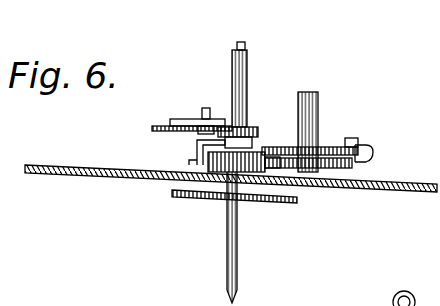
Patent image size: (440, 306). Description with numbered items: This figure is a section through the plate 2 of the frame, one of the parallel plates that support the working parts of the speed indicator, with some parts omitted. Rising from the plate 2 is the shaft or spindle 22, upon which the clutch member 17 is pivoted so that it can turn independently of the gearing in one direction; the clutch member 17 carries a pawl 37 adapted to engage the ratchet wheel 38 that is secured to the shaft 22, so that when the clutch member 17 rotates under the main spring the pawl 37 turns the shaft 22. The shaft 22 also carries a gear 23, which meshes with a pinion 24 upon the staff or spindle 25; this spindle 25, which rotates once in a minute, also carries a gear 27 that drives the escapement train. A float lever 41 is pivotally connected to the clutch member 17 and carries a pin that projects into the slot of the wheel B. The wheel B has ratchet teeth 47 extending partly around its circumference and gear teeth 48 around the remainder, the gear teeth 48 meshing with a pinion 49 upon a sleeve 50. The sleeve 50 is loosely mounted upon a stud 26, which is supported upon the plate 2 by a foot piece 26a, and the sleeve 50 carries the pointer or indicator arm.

The plate 2 is at (55, 166).
The ratchet teeth 47 is at (152, 127).
The wheel B is at (156, 126).
The gear teeth 48 is at (198, 130).
The sleeve 50 is at (247, 80).
The stud 26 is at (246, 46).
The pinion 49 is at (252, 128).
The foot piece 26a is at (196, 143).
The pinion 24 is at (217, 170).
The clutch member 17 is at (331, 147).
The float lever 41 is at (356, 139).
The ratchet wheel 38 is at (362, 150).
The pawl 37 is at (374, 156).
The gear 23 is at (340, 170).
The shaft or spindle 22 is at (318, 100).
The staff or spindle 25 is at (238, 242).
The gear 27 is at (272, 202).